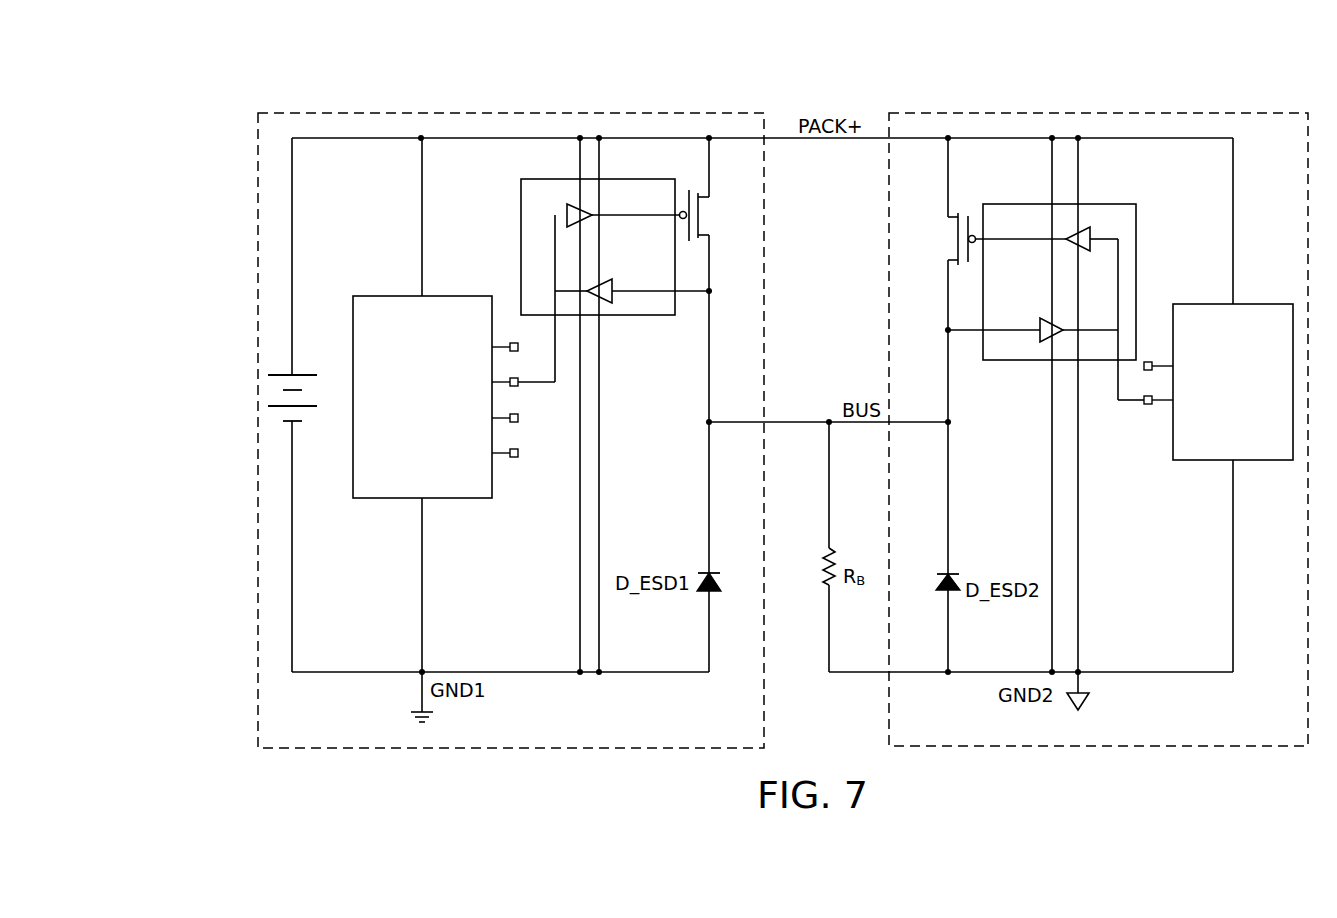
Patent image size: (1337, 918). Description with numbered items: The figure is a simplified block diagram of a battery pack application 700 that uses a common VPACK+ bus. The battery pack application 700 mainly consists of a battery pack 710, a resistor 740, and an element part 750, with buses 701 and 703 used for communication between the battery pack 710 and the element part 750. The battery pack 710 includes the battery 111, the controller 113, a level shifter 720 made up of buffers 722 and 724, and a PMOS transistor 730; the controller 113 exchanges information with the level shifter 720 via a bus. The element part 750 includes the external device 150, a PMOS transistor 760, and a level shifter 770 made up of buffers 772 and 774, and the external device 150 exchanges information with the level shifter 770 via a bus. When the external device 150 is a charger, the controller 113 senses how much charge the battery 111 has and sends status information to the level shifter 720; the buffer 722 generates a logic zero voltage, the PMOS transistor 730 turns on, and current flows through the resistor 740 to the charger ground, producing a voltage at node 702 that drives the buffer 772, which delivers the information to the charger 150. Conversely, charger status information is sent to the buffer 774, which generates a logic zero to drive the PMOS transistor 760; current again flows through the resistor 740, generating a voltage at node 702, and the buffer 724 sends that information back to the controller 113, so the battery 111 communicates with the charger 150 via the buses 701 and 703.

The battery pack application 700 is at (336, 92).
The battery pack 710 is at (645, 113).
The element part 750 is at (1220, 113).
The battery 111 is at (293, 375).
The controller 113 is at (440, 499).
The level shifter 720 is at (610, 316).
The buffer 722 is at (577, 204).
The buffer 724 is at (608, 282).
The PMOS transistor 730 is at (714, 208).
The bus 701 is at (718, 421).
The node 702 is at (829, 426).
The bus 703 is at (925, 421).
The resistor 740 is at (823, 563).
The PMOS transistor 760 is at (957, 247).
The level shifter 770 is at (1087, 204).
The buffer 772 is at (1047, 318).
The buffer 774 is at (1082, 235).
The external device 150 is at (1218, 462).